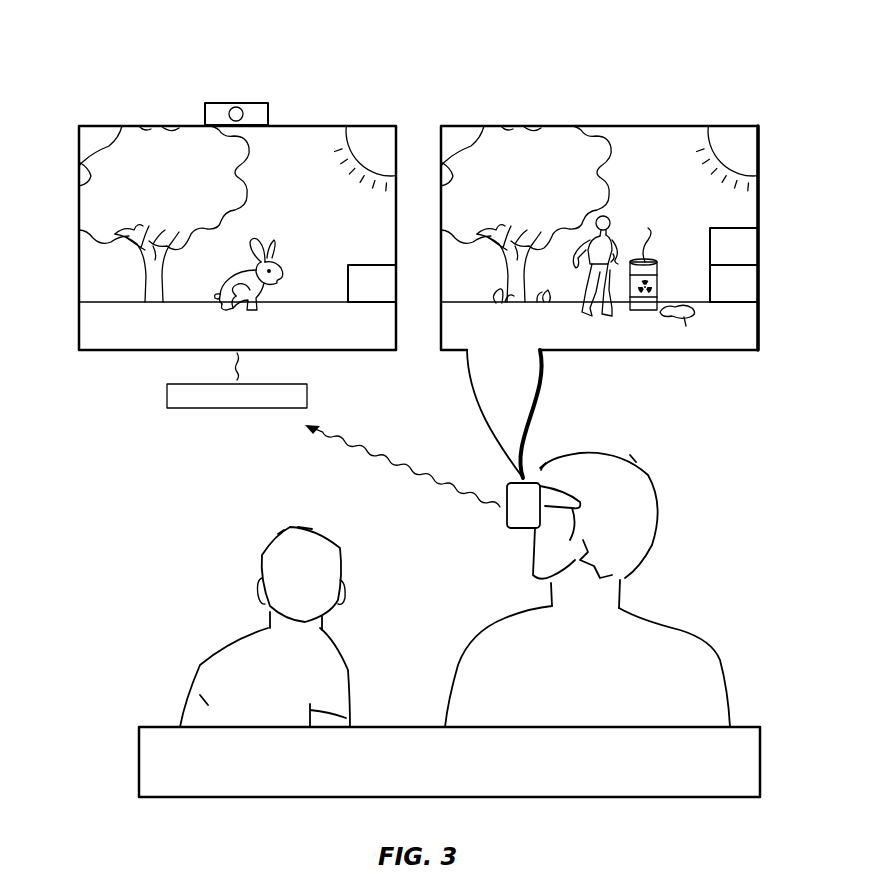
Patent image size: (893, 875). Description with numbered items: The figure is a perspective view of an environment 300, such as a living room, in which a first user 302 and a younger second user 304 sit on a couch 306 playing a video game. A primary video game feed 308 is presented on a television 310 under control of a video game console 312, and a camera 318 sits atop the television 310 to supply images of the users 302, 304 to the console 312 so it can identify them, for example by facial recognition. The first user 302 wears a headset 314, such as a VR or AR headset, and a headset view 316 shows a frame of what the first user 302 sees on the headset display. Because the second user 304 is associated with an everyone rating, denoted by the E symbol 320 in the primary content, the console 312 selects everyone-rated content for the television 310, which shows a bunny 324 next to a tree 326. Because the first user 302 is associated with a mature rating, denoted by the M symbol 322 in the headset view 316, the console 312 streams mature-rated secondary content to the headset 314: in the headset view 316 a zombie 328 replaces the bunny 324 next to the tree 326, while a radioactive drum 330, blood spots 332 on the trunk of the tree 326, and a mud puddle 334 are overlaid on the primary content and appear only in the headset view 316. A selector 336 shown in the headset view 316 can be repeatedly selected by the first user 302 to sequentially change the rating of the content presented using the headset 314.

The environment 300 is at (576, 84).
The first user 302 is at (665, 622).
The second user 304 is at (240, 638).
The couch 306 is at (735, 783).
The primary video game feed 308 is at (78, 172).
The television 310 is at (103, 125).
The video game console 312 is at (222, 408).
The headset 314 is at (517, 530).
The headset view 316 is at (603, 127).
The camera 318 is at (236, 103).
The E symbol 320 is at (380, 265).
The M symbol 322 is at (758, 283).
The bunny 324 is at (283, 262).
The tree 326 is at (188, 183).
The zombie 328 is at (606, 218).
The radioactive drum 330 is at (648, 228).
The blood spots 332 is at (500, 303).
The mud puddle 334 is at (688, 318).
The selector 336 is at (758, 240).